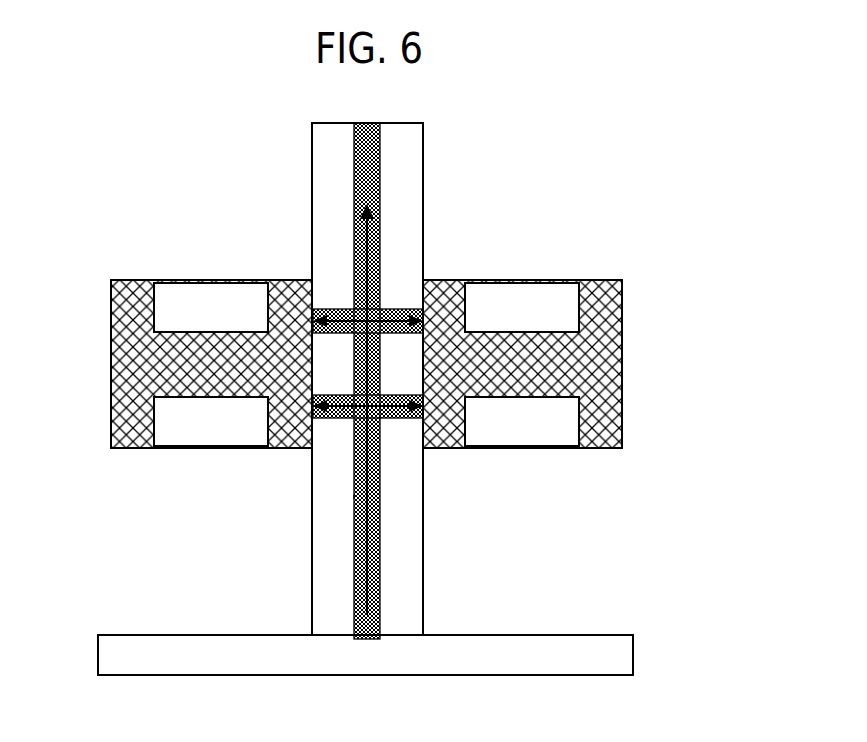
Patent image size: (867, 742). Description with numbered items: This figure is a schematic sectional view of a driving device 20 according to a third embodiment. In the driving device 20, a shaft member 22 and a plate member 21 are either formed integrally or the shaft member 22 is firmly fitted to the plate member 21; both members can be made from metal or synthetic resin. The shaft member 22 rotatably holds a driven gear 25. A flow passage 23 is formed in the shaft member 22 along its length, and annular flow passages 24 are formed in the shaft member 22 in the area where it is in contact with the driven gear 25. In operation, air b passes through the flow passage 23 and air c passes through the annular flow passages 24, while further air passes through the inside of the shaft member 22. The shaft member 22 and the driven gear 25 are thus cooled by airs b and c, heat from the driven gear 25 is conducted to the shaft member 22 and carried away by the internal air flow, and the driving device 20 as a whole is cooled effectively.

The driving device 20 is at (508, 218).
The plate member 21 is at (537, 636).
The shaft member 22 is at (425, 540).
The flow passage 23 is at (356, 252).
The annular flow passage 24 is at (401, 309).
The driven gear 25 is at (606, 281).
The air b is at (357, 497).
The air c is at (343, 320).